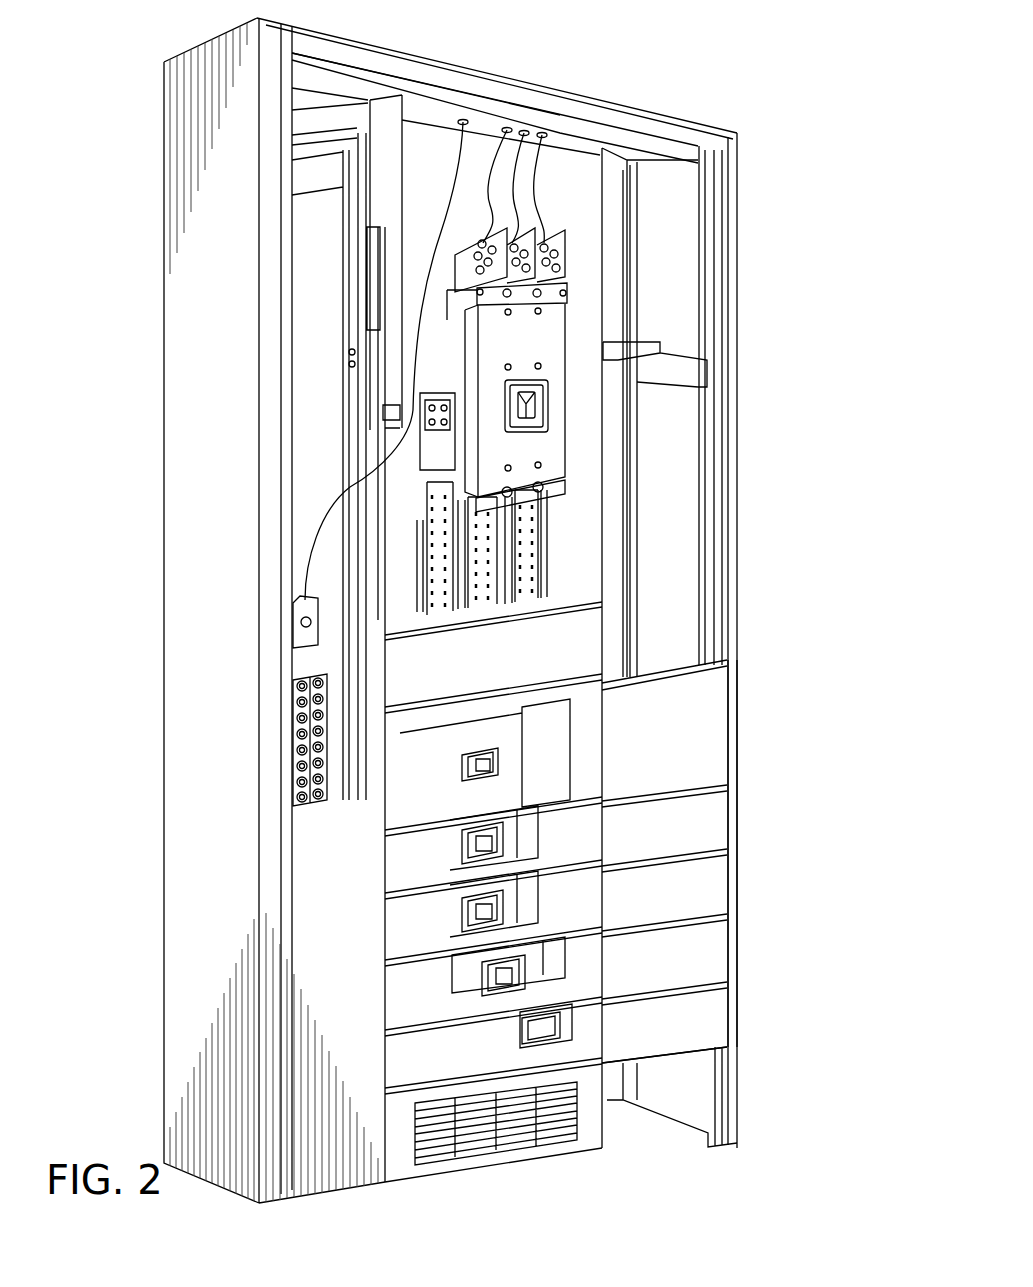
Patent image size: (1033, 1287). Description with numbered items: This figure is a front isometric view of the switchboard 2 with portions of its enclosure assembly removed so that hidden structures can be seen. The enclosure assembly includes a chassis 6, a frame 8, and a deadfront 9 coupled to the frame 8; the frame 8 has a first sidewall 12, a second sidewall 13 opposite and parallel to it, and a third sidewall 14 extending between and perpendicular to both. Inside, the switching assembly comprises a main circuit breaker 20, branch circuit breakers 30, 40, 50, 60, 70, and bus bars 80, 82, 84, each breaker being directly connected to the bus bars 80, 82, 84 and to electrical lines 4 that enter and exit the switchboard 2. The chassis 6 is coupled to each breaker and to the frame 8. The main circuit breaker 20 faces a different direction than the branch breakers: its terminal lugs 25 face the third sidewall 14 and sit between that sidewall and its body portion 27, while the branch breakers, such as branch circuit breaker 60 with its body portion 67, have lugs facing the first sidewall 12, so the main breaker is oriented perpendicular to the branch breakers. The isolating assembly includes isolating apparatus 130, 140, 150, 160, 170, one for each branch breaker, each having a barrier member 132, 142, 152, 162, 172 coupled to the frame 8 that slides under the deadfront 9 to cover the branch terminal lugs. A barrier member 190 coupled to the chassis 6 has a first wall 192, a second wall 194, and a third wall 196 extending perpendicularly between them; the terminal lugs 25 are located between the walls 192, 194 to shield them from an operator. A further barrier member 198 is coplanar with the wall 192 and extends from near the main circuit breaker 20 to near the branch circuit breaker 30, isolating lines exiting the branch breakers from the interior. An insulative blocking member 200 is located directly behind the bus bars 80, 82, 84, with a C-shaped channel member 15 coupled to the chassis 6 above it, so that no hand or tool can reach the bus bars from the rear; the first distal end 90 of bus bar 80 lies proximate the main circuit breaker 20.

The switchboard 2 is at (150, 137).
The electrical lines 4 is at (490, 195).
The chassis 6 is at (372, 578).
The frame 8 is at (737, 467).
The deadfront 9 is at (587, 772).
The first sidewall 12 is at (737, 615).
The second sidewall 13 is at (190, 514).
The third sidewall 14 is at (600, 118).
The channel member 15 is at (390, 410).
The main circuit breaker 20 is at (567, 355).
The terminal lugs 25 is at (552, 266).
The body portion 27 is at (557, 418).
The branch circuit breaker 30 is at (450, 773).
The branch circuit breaker 40 is at (450, 855).
The branch circuit breaker 50 is at (450, 920).
The branch circuit breaker 60 is at (475, 980).
The body portion 67 is at (522, 967).
The branch circuit breaker 70 is at (513, 1040).
The bus bar 80 is at (440, 617).
The bus bar 82 is at (488, 605).
The bus bar 84 is at (538, 582).
The first distal end 90 is at (418, 560).
The isolating apparatus 130 is at (733, 757).
The barrier member 132 is at (710, 733).
The isolating apparatus 140 is at (733, 837).
The barrier member 142 is at (712, 818).
The isolating apparatus 150 is at (733, 898).
The barrier member 152 is at (712, 880).
The isolating apparatus 160 is at (733, 957).
The barrier member 162 is at (713, 938).
The isolating apparatus 170 is at (733, 1025).
The barrier member 172 is at (713, 1007).
The barrier member 190 is at (440, 135).
The first wall 192 is at (582, 160).
The second wall 194 is at (390, 128).
The third wall 196 is at (483, 138).
The barrier member 198 is at (568, 538).
The insulative blocking member 200 is at (395, 618).